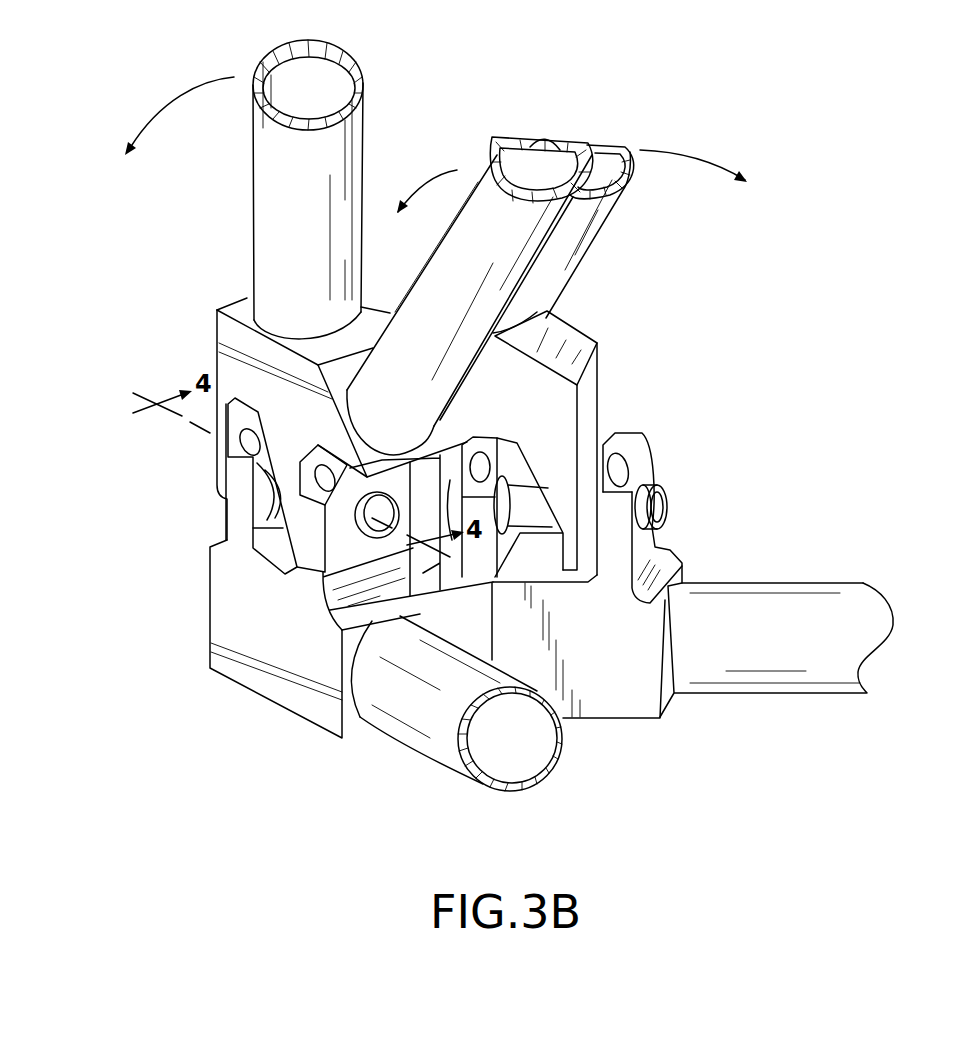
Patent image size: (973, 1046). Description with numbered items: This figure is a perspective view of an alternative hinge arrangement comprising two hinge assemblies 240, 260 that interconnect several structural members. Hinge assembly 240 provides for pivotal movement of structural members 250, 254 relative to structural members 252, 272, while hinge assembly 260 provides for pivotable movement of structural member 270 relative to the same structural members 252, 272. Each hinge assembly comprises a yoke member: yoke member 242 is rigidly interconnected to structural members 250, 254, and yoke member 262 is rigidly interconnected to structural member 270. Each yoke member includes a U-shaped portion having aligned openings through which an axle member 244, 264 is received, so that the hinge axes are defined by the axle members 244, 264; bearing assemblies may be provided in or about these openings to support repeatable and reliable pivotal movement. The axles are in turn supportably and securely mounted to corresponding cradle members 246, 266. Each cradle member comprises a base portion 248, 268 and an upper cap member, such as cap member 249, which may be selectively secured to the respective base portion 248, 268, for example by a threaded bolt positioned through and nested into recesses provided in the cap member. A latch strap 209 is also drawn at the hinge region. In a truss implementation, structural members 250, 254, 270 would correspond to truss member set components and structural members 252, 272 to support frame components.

The latch strap 209 is at (505, 460).
The hinge assembly 240 is at (198, 504).
The yoke member 242 is at (228, 330).
The axle member 244 is at (357, 523).
The cradle member 246 is at (188, 565).
The base portion 248 is at (318, 708).
The upper cap member 249 is at (310, 513).
The structural member 250 is at (278, 230).
The structural member 252 is at (441, 731).
The structural member 254 is at (489, 152).
The hinge assembly 260 is at (728, 481).
The yoke member 262 is at (596, 397).
The axle member 264 is at (668, 507).
The cradle member 266 is at (678, 548).
The base portion 268 is at (623, 710).
The structural member 270 is at (581, 228).
The structural member 272 is at (874, 602).